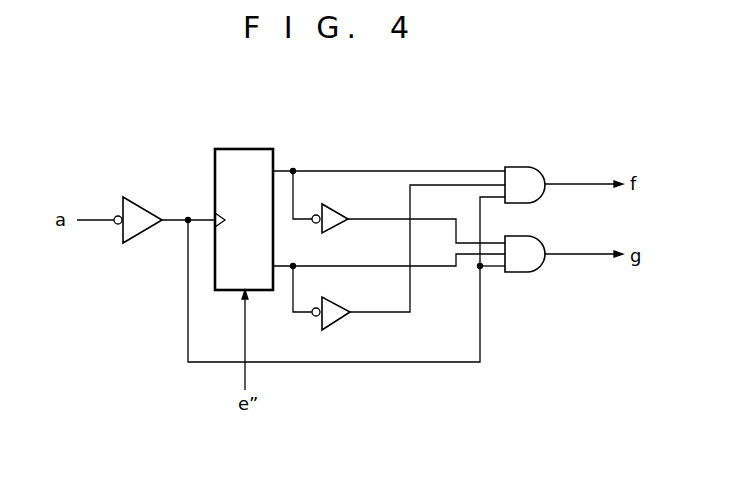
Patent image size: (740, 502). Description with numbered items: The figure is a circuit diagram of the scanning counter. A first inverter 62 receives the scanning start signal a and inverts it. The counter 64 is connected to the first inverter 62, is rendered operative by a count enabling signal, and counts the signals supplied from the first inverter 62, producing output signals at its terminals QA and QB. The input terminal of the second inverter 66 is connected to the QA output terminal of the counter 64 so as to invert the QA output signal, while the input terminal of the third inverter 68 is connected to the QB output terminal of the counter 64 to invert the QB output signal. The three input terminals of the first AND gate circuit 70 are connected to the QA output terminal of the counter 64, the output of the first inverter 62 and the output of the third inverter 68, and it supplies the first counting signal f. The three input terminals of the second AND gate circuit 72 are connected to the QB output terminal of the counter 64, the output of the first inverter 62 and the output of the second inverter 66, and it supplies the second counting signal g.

The first inverter 62 is at (137, 217).
The counter 64 is at (240, 150).
The second inverter 66 is at (333, 210).
The third inverter 68 is at (333, 307).
The first AND gate circuit 70 is at (522, 177).
The second AND gate circuit 72 is at (525, 265).